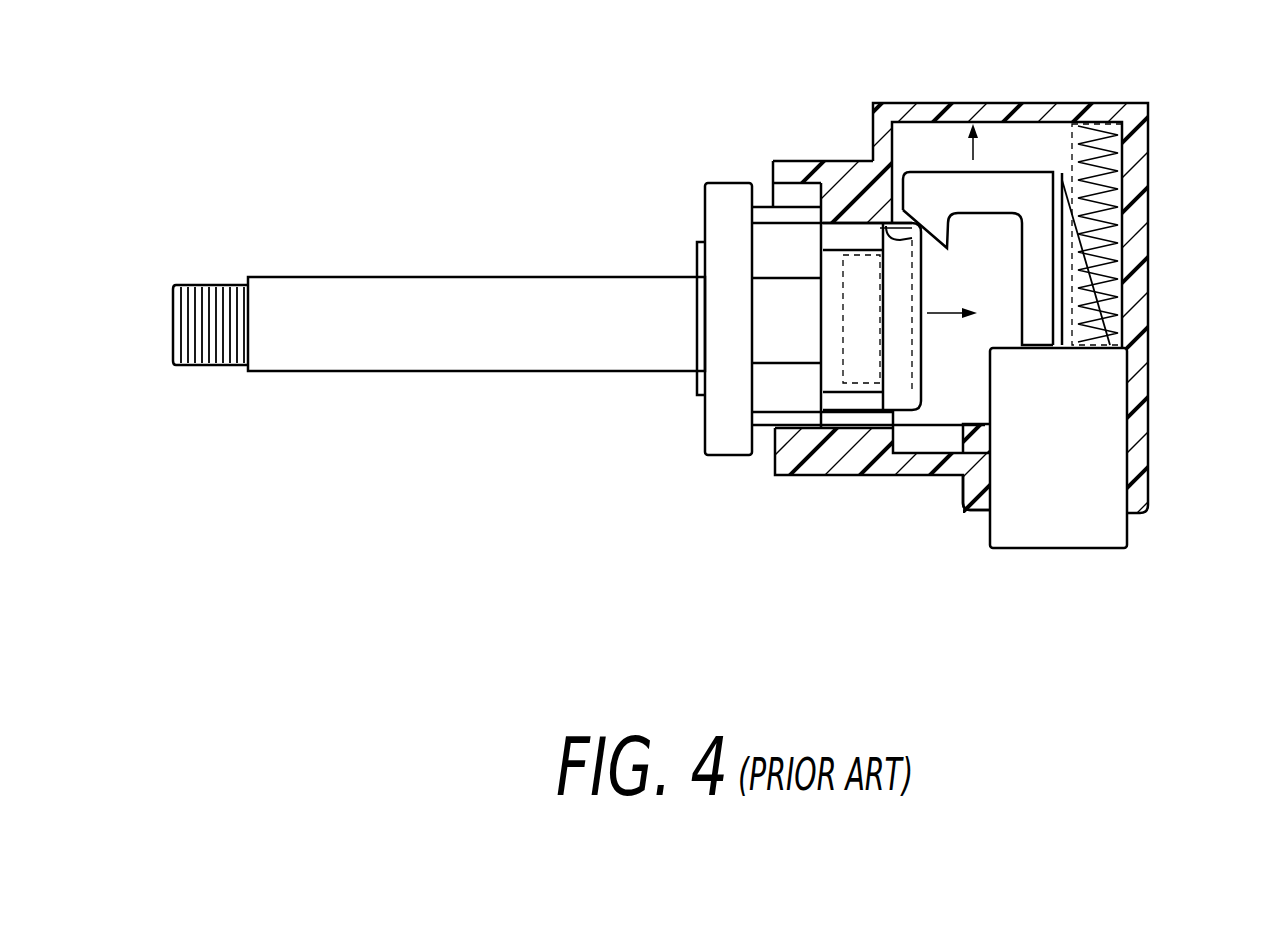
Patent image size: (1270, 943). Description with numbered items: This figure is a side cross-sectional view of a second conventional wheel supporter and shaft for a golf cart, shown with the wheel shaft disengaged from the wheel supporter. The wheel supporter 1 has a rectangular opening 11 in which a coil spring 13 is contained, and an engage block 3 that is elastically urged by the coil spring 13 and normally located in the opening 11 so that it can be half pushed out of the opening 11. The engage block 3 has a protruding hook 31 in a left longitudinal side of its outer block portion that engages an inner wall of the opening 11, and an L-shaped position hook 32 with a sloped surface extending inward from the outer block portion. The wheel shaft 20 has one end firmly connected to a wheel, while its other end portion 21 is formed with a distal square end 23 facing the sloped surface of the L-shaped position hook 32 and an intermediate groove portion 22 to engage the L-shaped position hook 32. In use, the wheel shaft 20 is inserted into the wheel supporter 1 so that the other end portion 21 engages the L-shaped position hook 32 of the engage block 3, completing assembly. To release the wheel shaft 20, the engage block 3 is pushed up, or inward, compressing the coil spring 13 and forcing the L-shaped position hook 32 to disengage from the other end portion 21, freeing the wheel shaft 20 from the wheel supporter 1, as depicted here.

The wheel supporter 1 is at (1137, 172).
The rectangular opening 11 is at (1030, 150).
The coil spring 13 is at (1120, 298).
The engage block 3 is at (1095, 523).
The protruding hook 31 is at (985, 437).
The L-shaped position hook 32 is at (930, 236).
The wheel shaft 20 is at (483, 388).
The other end portion 21 is at (730, 457).
The intermediate groove portion 22 is at (858, 377).
The distal square end 23 is at (880, 237).